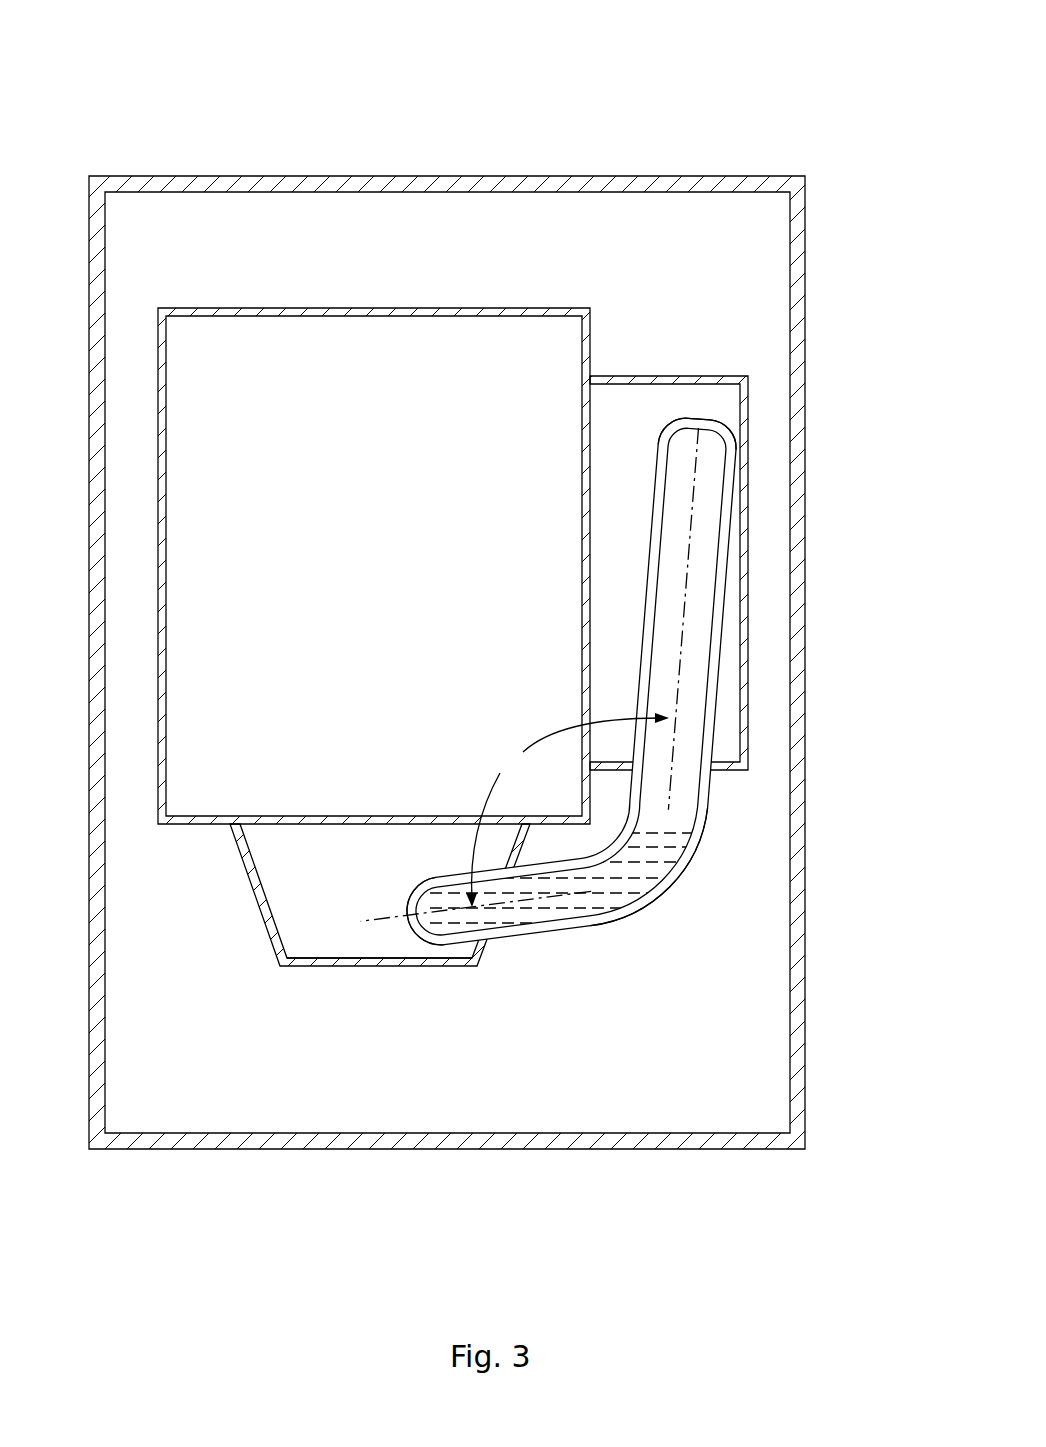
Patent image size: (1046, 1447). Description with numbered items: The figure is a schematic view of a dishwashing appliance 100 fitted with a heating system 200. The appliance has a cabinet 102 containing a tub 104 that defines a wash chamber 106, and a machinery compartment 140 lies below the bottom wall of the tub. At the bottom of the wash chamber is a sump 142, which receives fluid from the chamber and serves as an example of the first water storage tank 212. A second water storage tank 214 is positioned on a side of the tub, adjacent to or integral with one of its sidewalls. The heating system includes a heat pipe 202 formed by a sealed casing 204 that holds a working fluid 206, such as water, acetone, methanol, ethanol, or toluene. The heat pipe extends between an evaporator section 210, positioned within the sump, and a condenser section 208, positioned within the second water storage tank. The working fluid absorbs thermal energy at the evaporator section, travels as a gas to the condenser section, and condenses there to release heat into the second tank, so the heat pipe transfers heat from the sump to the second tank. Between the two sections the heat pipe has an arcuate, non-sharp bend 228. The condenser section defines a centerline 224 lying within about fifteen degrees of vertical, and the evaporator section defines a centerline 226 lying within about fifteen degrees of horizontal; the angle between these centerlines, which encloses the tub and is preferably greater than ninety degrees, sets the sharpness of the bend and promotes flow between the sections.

The dishwashing appliance 100 is at (147, 100).
The cabinet 102 is at (467, 186).
The tub 104 is at (384, 565).
The wash chamber 106 is at (253, 355).
The machinery compartment 140 is at (168, 1105).
The sump 142 is at (300, 897).
The heating system 200 is at (628, 642).
The heat pipe 202 is at (722, 1014).
The casing 204 is at (640, 677).
The working fluid 206 is at (535, 912).
The condenser section 208 is at (684, 405).
The evaporator section 210 is at (403, 955).
The first water storage tank 212 is at (290, 955).
The second water storage tank 214 is at (612, 572).
The centerline of the condenser section 224 is at (700, 410).
The centerline of the evaporator section 226 is at (393, 927).
The bend 228 is at (668, 884).